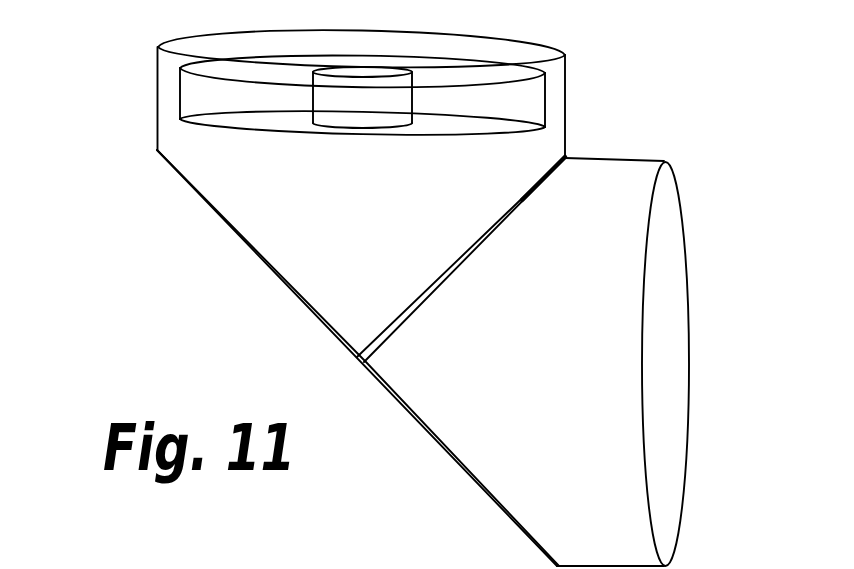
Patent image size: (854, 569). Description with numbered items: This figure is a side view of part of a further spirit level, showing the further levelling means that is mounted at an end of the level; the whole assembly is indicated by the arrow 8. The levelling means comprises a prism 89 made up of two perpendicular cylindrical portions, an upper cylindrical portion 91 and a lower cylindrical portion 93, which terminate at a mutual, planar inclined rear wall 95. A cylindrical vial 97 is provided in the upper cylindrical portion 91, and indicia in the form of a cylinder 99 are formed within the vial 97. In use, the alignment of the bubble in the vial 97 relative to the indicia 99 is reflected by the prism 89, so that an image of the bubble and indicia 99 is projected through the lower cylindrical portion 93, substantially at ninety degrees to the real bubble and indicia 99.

The filter assembly 8 is at (606, 114).
The prism 89 is at (448, 265).
The upper cylindrical portion 91 is at (157, 93).
The lower cylindrical portion 93 is at (690, 354).
The inclined rear wall 95 is at (361, 366).
The cylindrical vial 97 is at (465, 135).
The indicia 99 is at (313, 96).